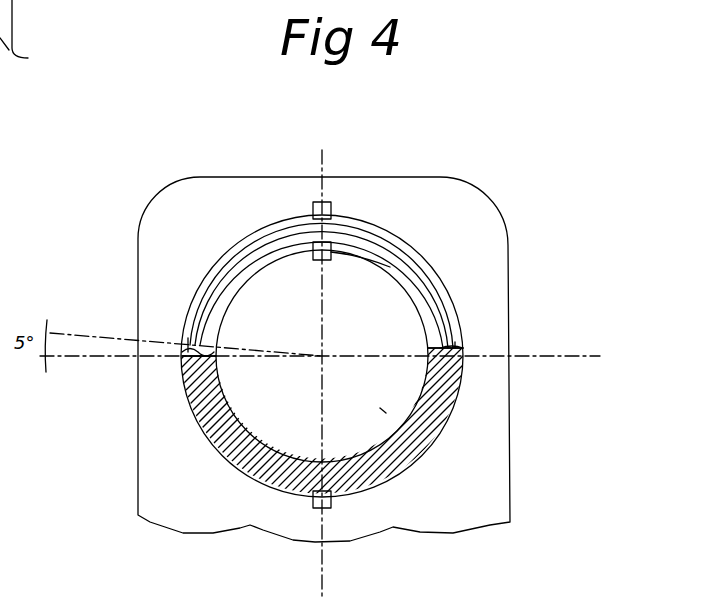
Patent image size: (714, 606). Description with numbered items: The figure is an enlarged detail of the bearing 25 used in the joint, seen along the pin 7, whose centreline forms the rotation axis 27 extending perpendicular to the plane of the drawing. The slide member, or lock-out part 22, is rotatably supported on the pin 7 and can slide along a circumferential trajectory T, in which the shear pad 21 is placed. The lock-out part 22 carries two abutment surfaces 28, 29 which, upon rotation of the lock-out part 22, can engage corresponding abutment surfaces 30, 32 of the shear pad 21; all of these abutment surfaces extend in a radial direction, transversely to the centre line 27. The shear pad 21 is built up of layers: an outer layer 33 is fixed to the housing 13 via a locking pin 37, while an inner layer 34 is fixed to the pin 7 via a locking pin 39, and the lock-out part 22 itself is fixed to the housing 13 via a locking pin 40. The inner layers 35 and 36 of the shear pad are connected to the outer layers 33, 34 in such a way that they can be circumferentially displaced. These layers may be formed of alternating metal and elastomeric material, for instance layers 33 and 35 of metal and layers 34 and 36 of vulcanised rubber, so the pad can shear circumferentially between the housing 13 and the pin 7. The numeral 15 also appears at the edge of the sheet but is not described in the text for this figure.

The pin 7 is at (288, 420).
The housing 13 is at (172, 462).
The adjacent figure reference 15 is at (27, 34).
The shear pad 21 is at (426, 278).
The lock-out part 22 is at (433, 430).
The bearing 25 is at (194, 278).
The rotation axis 27 is at (380, 408).
The abutment surface 28 is at (182, 356).
The abutment surface 29 is at (465, 365).
The abutment surface 30 is at (190, 345).
The abutment surface 32 is at (466, 352).
The outer layer 33 is at (230, 257).
The inner layer 34 is at (257, 263).
The inner layer 35 is at (365, 242).
The inner layer 36 is at (343, 230).
The locking pin 37 is at (315, 204).
The locking pin 39 is at (390, 267).
The locking pin 40 is at (328, 506).
The circumferential trajectory T is at (465, 357).